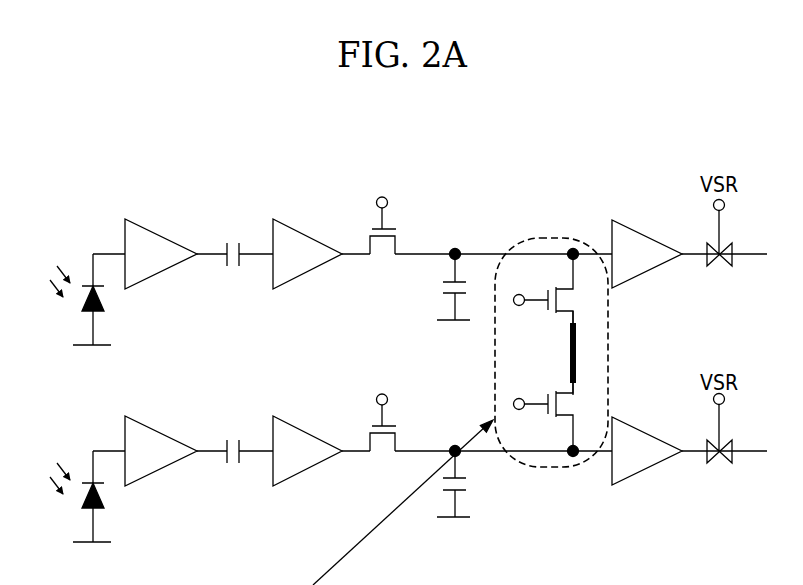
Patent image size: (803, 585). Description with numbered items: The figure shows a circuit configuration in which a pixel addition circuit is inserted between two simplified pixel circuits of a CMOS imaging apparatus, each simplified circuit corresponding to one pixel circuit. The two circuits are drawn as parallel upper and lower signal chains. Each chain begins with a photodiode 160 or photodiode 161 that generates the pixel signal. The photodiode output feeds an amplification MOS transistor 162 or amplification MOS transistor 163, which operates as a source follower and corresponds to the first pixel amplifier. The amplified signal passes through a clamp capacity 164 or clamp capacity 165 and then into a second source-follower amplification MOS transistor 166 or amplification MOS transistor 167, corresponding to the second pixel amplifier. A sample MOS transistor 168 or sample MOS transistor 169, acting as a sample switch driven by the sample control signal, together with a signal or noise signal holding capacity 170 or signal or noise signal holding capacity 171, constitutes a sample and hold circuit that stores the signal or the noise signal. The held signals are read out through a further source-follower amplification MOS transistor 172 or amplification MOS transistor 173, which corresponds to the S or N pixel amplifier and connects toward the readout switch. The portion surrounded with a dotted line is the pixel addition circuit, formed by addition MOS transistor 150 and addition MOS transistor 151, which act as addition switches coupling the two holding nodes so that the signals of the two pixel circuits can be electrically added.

The addition MOS transistor 150 is at (547, 300).
The addition MOS transistor 151 is at (547, 402).
The photodiode 160 is at (84, 284).
The photodiode 161 is at (84, 481).
The amplification MOS transistor 162 is at (167, 236).
The amplification MOS transistor 163 is at (167, 430).
The clamp capacity 164 is at (232, 243).
The clamp capacity 165 is at (232, 440).
The amplification MOS transistor 166 is at (306, 230).
The amplification MOS transistor 167 is at (304, 418).
The sample MOS transistor 168 is at (397, 230).
The sample MOS transistor 169 is at (375, 427).
The signal or noise signal holding capacity 170 is at (443, 285).
The signal or noise signal holding capacity 171 is at (467, 487).
The amplification MOS transistor 172 is at (657, 236).
The amplification MOS transistor 173 is at (653, 433).